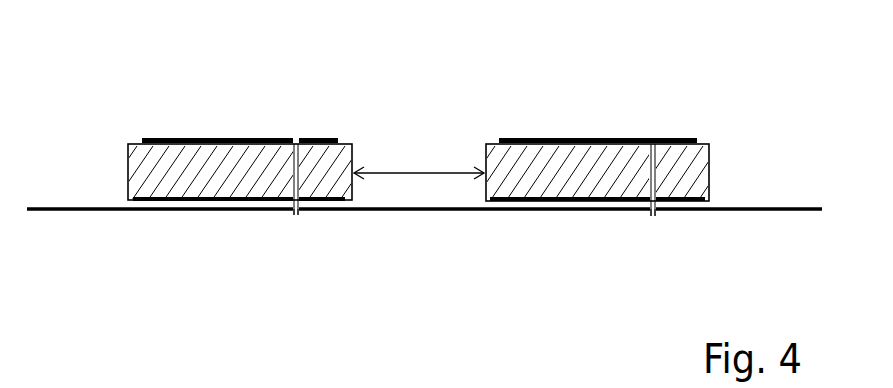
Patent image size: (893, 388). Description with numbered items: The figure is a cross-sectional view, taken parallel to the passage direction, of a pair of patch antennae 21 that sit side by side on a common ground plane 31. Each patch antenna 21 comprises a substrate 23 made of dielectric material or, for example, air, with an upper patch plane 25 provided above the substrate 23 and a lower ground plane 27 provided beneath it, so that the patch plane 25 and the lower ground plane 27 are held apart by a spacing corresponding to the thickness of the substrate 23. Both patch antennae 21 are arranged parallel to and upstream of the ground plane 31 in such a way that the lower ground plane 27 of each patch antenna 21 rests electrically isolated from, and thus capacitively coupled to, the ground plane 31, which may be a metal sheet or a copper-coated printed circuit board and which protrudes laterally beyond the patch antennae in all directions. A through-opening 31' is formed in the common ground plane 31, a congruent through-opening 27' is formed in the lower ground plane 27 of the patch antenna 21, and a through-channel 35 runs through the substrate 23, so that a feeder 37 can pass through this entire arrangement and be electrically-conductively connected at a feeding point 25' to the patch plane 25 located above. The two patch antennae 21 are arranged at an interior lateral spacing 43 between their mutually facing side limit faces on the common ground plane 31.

The patch antenna 21 is at (160, 102).
The substrate 23 is at (243, 163).
The upper patch plane 25 is at (419, 102).
The feeding point 25' is at (326, 99).
The lower ground plane 27 is at (345, 236).
The through-opening 27' is at (547, 186).
The ground plane 31 is at (424, 246).
The through-opening 31' is at (506, 256).
The through-channel 35 is at (292, 162).
The feeder 37 is at (297, 175).
The lateral spacing 43 is at (410, 170).